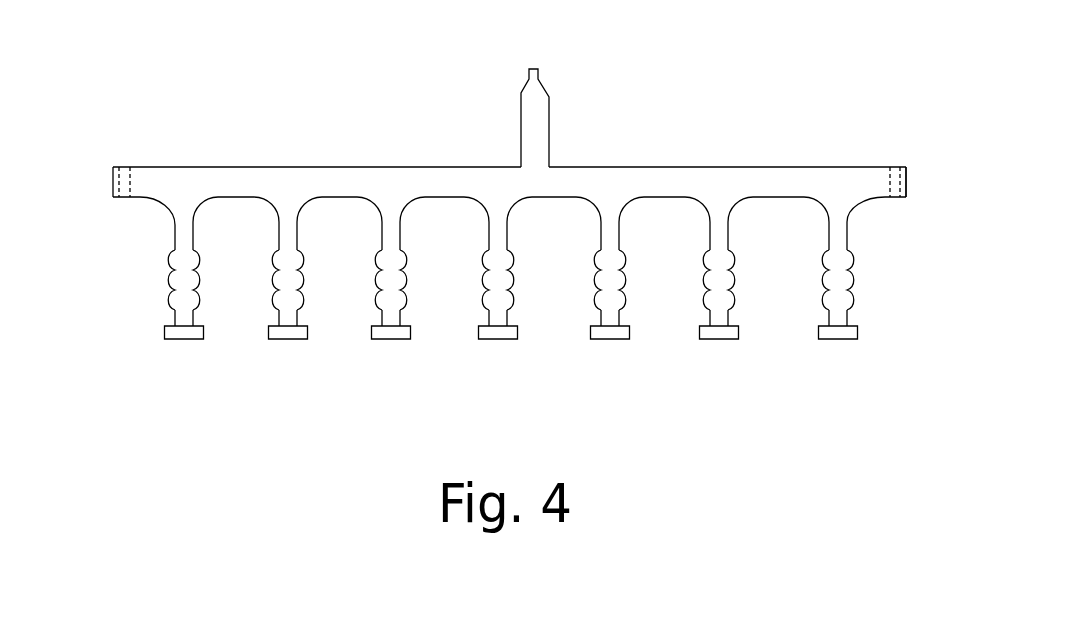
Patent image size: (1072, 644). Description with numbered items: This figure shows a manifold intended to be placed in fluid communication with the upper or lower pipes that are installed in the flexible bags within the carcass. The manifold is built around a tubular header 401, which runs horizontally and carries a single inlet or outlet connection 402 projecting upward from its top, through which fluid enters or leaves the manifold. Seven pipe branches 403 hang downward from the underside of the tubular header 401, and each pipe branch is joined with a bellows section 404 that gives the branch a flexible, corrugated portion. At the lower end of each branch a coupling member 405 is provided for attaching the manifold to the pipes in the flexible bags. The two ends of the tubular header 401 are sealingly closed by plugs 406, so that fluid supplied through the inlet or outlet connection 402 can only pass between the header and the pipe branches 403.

The tubular header 401 is at (323, 175).
The inlet or outlet connection 402 is at (550, 98).
The pipe branches 403 is at (174, 232).
The bellows sections 404 is at (174, 298).
The coupling members 405 is at (163, 332).
The plugs 406 is at (897, 188).